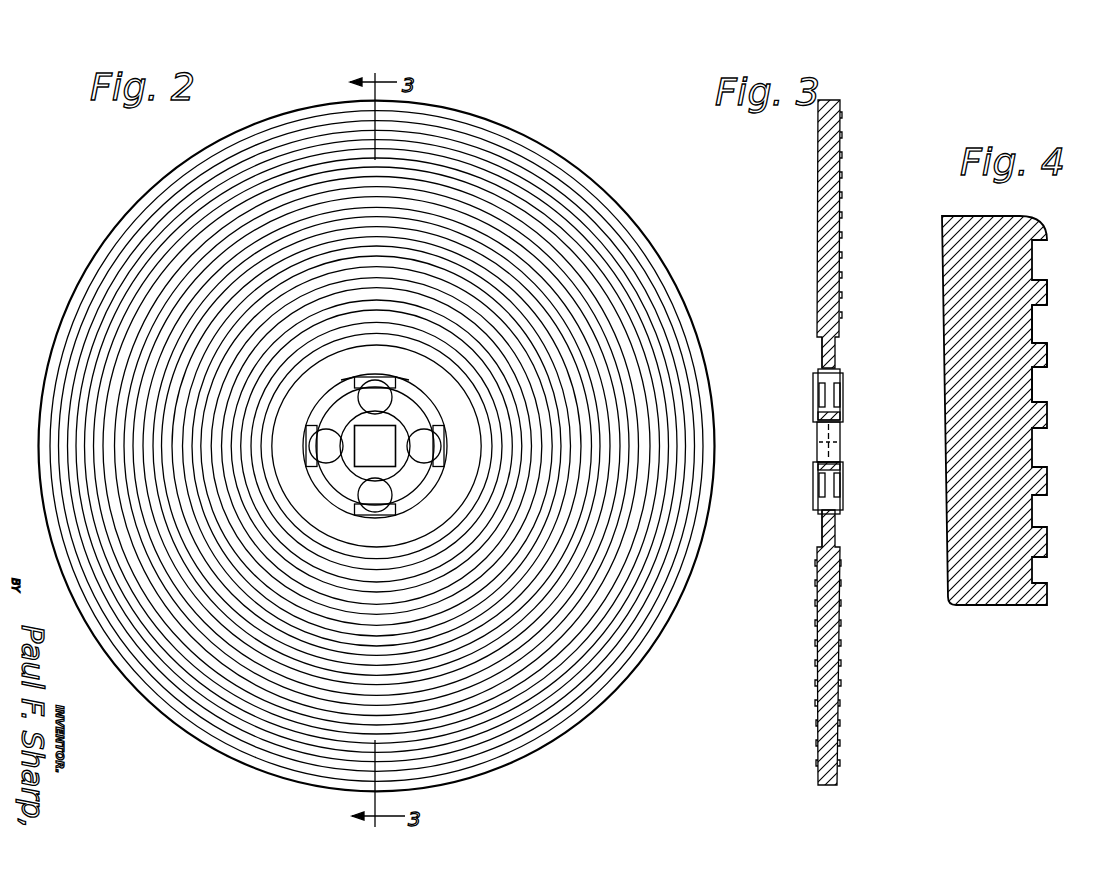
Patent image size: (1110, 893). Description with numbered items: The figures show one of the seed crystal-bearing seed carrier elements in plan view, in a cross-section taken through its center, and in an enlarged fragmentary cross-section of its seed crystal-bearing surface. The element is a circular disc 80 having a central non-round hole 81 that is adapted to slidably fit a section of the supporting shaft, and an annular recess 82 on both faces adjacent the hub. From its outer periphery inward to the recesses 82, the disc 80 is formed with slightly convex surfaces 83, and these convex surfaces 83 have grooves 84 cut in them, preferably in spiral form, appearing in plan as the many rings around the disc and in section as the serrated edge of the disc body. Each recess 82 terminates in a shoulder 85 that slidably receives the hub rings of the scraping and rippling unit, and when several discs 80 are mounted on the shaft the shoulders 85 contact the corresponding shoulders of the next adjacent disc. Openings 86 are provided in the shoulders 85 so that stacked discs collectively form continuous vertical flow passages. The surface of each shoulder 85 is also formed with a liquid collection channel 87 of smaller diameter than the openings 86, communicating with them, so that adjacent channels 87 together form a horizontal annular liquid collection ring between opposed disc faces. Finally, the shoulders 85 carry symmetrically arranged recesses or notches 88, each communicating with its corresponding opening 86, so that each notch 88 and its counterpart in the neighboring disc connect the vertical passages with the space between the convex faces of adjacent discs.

In FIG. 2, the circular disc 80 is at (701, 328).
In FIG. 3, the circular disc 80 is at (826, 229).
In FIG. 4, the circular disc 80 is at (953, 397).
In FIG. 2, the central non-round hole 81 is at (365, 433).
In FIG. 3, the central non-round hole 81 is at (836, 446).
In FIG. 2, the annular recess 82 is at (283, 443).
In FIG. 3, the annular recess 82 is at (837, 352).
In FIG. 3, the convex surface 83 is at (840, 243).
In FIG. 4, the convex surface 83 is at (1049, 357).
In FIG. 2, the grooves 84 is at (703, 417).
In FIG. 3, the grooves 84 is at (842, 154).
In FIG. 4, the grooves 84 is at (1038, 266).
In FIG. 2, the shoulder 85 is at (424, 486).
In FIG. 3, the shoulder 85 is at (843, 495).
In FIG. 2, the openings 86 is at (419, 434).
In FIG. 3, the openings 86 is at (825, 490).
In FIG. 2, the liquid collection channel 87 is at (407, 495).
In FIG. 3, the liquid collection channel 87 is at (838, 395).
In FIG. 2, the recess or notch 88 is at (440, 454).